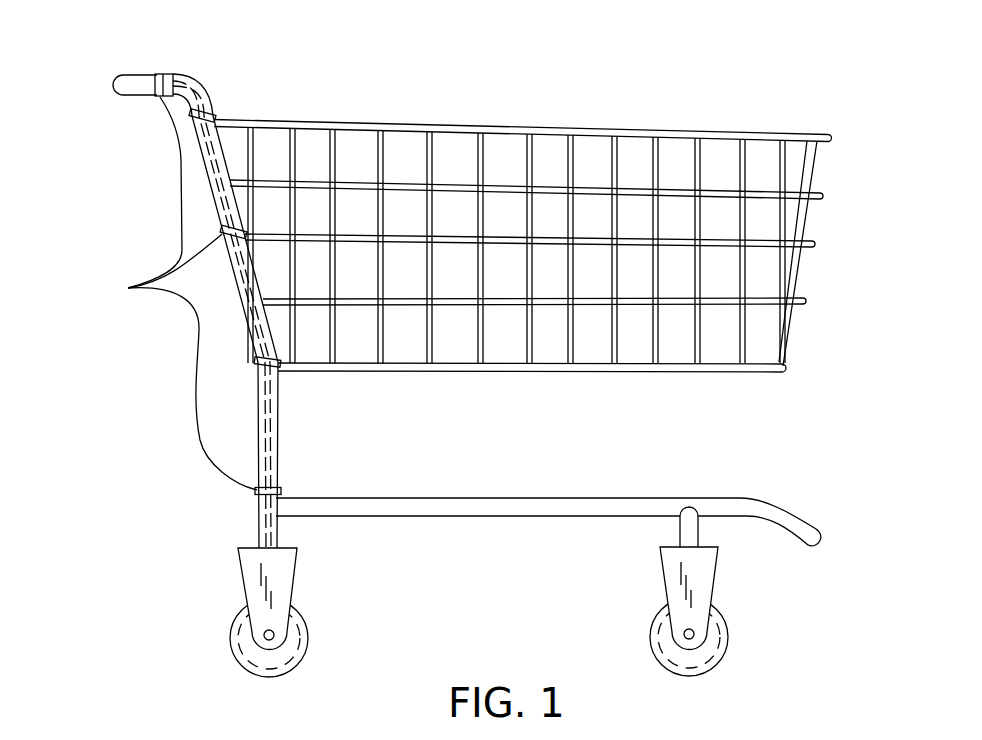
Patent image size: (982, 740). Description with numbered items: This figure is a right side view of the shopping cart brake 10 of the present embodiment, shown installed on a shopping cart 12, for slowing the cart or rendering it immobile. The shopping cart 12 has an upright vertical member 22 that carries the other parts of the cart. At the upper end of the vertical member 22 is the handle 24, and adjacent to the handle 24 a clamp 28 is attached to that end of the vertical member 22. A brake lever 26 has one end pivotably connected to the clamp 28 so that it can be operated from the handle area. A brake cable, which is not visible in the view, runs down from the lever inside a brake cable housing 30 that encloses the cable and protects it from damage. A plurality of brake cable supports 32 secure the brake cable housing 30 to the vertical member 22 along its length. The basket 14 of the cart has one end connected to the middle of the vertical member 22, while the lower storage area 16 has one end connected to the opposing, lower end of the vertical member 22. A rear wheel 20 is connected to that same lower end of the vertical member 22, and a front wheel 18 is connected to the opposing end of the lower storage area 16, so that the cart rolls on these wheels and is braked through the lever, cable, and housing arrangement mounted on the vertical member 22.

The shopping cart brake 10 is at (122, 36).
The shopping cart 12 is at (544, 122).
The basket 14 is at (720, 128).
The lower storage area 16 is at (772, 500).
The front wheel 18 is at (728, 630).
The rear wheel 20 is at (231, 634).
The vertical member 22 is at (278, 394).
The handle 24 is at (128, 96).
The brake lever 26 is at (181, 74).
The clamp 28 is at (160, 97).
The brake cable housing 30 is at (268, 448).
The brake cable supports 32 is at (128, 288).